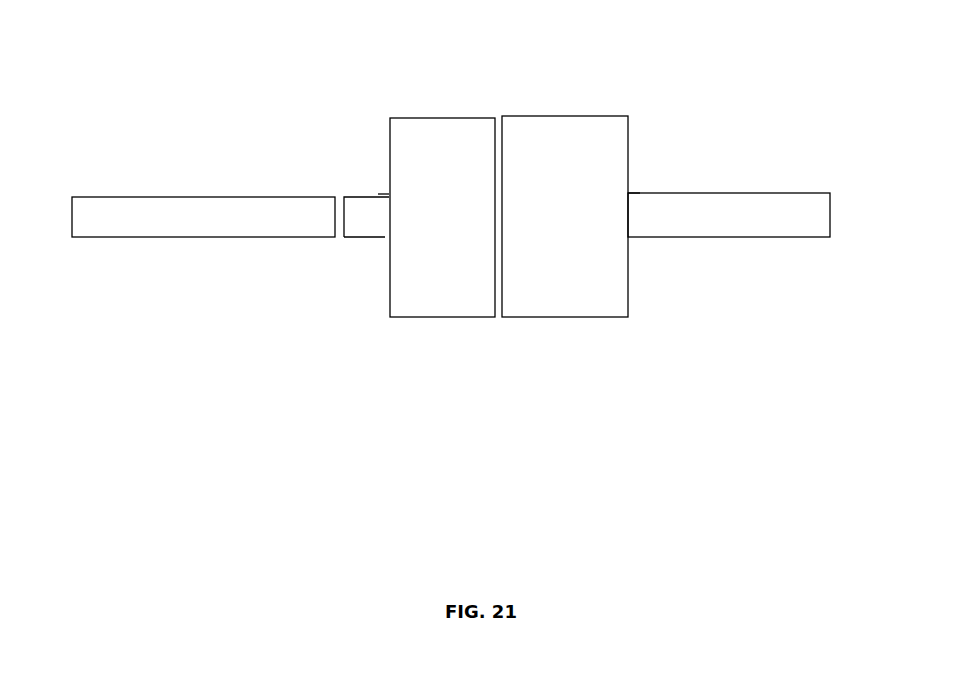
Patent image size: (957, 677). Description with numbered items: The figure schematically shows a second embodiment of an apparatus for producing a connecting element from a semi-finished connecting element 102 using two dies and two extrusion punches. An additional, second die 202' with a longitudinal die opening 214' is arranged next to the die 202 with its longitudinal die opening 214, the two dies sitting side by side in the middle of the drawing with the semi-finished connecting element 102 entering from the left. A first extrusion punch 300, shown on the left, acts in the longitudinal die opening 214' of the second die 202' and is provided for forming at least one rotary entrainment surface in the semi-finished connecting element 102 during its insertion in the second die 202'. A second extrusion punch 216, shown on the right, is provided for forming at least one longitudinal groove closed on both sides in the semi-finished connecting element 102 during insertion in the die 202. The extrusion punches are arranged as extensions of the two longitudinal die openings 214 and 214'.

The extrusion punch 300 is at (203, 187).
The semi-finished connecting element 102 is at (357, 240).
The longitudinal die opening 214' is at (354, 171).
The second die 202' is at (442, 177).
The die 202 is at (586, 177).
The longitudinal die opening 214 is at (662, 170).
The second extrusion punch 216 is at (797, 242).